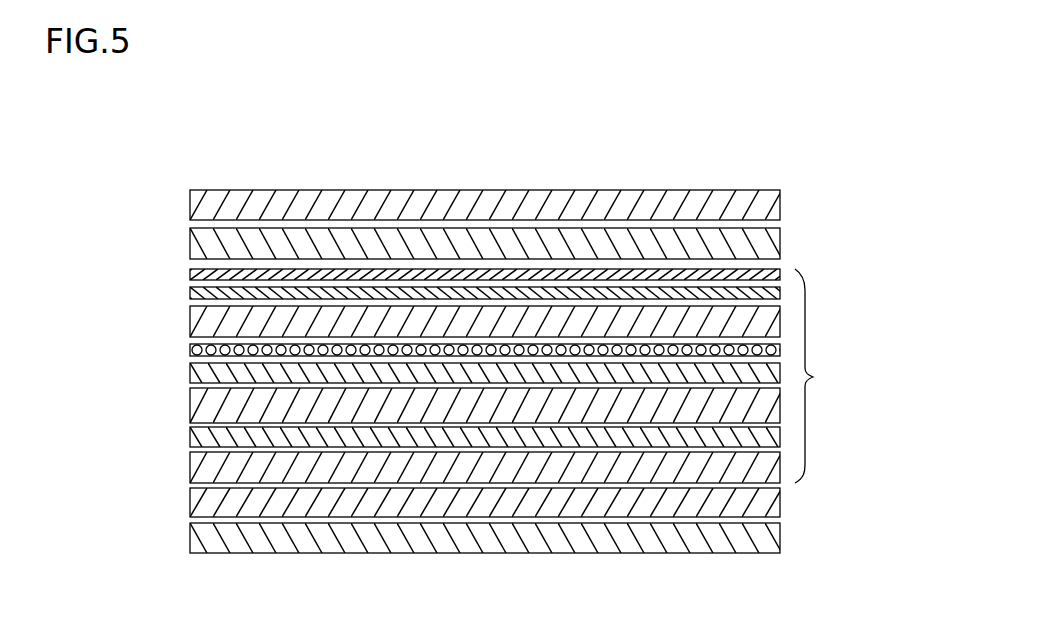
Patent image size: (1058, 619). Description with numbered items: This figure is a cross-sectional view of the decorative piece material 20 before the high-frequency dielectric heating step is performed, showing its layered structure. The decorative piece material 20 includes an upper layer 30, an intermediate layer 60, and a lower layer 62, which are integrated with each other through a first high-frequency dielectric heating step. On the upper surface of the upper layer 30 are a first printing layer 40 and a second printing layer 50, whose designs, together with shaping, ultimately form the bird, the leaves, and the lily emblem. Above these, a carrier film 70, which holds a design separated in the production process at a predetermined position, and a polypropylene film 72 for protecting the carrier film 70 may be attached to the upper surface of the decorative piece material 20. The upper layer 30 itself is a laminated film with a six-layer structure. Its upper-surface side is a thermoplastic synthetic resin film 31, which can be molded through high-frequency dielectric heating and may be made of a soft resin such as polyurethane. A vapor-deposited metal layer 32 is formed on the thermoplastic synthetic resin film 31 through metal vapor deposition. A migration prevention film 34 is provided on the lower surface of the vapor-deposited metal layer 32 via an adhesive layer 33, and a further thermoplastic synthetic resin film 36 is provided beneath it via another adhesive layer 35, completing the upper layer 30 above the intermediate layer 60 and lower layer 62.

The decorative piece material 20 is at (198, 168).
The upper layer 30 is at (822, 376).
The thermoplastic synthetic resin film 31 is at (194, 313).
The vapor-deposited metal layer 32 is at (192, 350).
The adhesive layer 33 is at (194, 370).
The migration prevention film 34 is at (194, 399).
The adhesive layer 35 is at (194, 434).
The thermoplastic synthetic resin film 36 is at (194, 463).
The first printing layer 40 is at (192, 290).
The second printing layer 50 is at (192, 271).
The intermediate layer 60 is at (777, 497).
The lower layer 62 is at (777, 540).
The carrier film 70 is at (777, 246).
The polypropylene film 72 is at (777, 204).